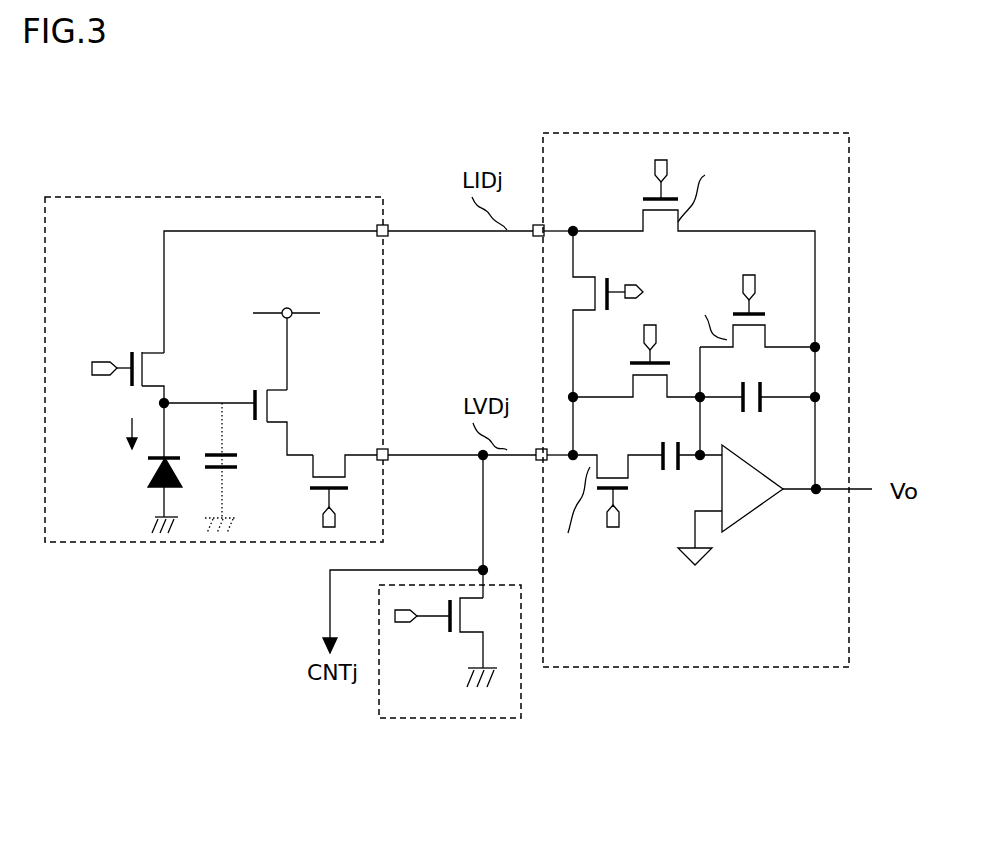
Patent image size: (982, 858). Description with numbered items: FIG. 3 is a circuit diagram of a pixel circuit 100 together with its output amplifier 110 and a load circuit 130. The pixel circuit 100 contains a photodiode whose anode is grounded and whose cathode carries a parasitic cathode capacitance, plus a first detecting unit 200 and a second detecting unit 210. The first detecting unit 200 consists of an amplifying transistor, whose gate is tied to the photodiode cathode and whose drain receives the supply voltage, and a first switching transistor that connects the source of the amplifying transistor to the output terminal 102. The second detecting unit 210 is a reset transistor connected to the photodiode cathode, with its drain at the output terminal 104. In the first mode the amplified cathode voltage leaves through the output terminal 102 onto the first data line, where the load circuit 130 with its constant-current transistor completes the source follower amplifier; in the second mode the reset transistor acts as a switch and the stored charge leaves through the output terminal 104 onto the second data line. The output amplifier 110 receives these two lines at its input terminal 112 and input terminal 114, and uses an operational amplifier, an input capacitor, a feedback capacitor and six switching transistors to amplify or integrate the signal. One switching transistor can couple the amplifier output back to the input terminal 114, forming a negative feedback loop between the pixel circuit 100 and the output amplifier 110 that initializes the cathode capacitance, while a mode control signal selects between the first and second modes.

The pixel circuit 100 is at (112, 543).
The output terminal 102 is at (387, 447).
The output terminal 104 is at (388, 228).
The output amplifier 110 is at (727, 668).
The input terminal 112 is at (535, 463).
The input terminal 114 is at (537, 237).
The load circuit 130 is at (452, 718).
The first detecting unit 200 is at (368, 442).
The second detecting unit 210 is at (172, 377).